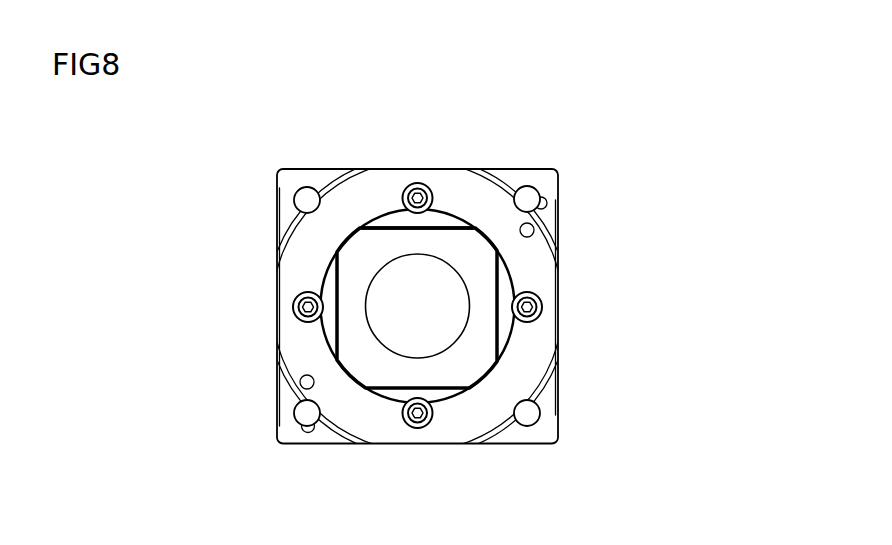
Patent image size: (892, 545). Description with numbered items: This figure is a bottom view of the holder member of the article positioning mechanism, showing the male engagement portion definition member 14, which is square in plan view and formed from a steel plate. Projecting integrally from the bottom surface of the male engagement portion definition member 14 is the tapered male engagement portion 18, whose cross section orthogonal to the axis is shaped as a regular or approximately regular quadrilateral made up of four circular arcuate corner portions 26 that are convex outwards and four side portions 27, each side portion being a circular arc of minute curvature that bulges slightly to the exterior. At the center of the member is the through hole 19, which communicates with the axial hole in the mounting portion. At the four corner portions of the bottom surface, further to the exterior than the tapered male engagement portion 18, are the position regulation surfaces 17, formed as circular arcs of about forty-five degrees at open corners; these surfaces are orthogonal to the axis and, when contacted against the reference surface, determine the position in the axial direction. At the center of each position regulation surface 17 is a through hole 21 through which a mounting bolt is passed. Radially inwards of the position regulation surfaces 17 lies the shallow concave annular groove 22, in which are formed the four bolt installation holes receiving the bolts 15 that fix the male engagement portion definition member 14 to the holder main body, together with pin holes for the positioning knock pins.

The male engagement portion definition member 14 is at (567, 158).
The bolts 15 is at (293, 308).
The position regulation surfaces 17 is at (281, 238).
The tapered male engagement portion 18 is at (470, 210).
The through hole 19 is at (438, 323).
The through hole 21 is at (541, 199).
The shallow concave annular groove 22 is at (402, 432).
The circular arcuate corner portions 26 is at (498, 242).
The side portions 27 is at (398, 227).